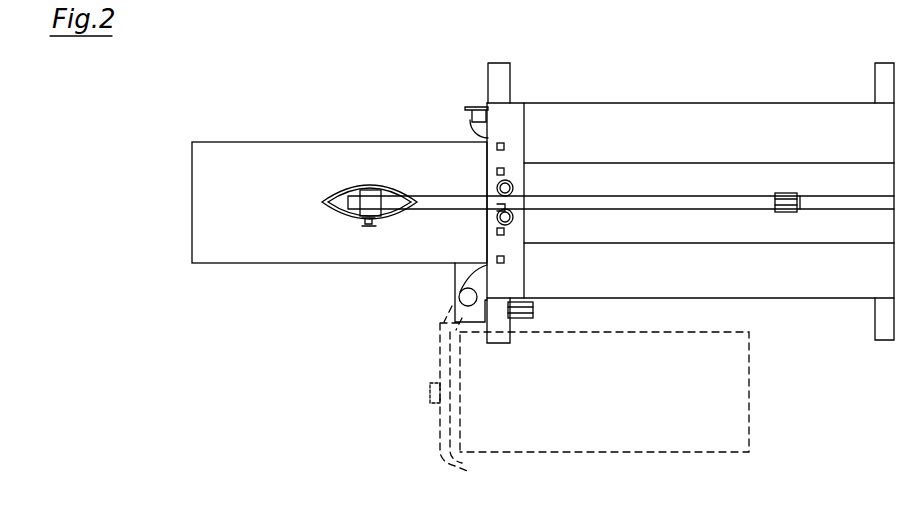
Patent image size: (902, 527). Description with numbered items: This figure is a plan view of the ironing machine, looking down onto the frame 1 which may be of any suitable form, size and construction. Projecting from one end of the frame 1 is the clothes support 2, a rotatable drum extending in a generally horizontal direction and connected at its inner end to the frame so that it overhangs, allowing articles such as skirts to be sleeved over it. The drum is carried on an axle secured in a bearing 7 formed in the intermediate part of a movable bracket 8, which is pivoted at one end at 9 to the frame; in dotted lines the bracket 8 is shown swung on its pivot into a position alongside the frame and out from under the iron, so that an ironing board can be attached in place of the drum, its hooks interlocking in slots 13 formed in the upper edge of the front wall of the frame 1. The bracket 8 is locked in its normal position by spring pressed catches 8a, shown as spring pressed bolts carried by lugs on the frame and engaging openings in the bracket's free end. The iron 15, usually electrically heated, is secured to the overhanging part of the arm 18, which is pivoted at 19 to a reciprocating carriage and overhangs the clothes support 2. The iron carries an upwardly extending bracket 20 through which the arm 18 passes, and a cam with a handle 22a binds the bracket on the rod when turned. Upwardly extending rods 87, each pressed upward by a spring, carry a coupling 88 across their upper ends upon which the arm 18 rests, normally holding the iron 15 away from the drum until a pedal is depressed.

The frame 1 is at (846, 106).
The clothes support 2 is at (339, 202).
The bearing 7 is at (430, 406).
The movable bracket 8 is at (440, 346).
The spring pressed catches 8a is at (470, 113).
The pivot 9 is at (466, 298).
The slots 13 is at (496, 172).
The iron 15 is at (348, 187).
The arm 18 is at (593, 205).
The pivot 19 is at (786, 213).
The bracket 20 is at (369, 192).
The handle 22a is at (364, 227).
The rods 87 is at (515, 188).
The coupling 88 is at (497, 213).